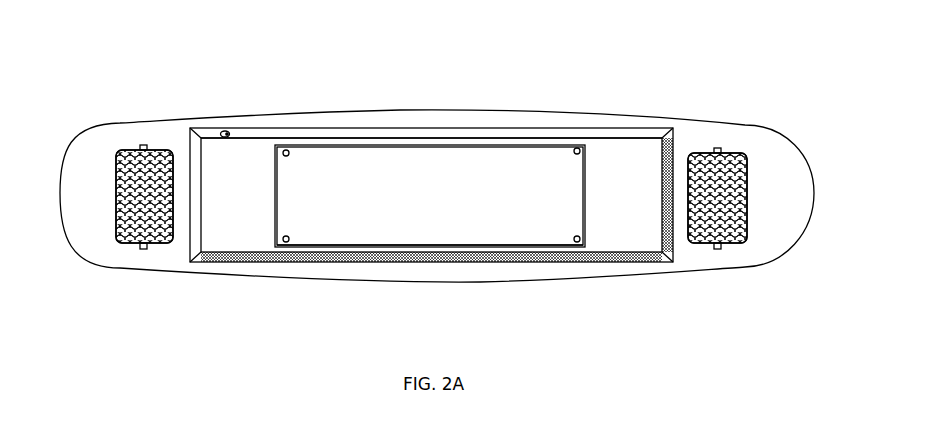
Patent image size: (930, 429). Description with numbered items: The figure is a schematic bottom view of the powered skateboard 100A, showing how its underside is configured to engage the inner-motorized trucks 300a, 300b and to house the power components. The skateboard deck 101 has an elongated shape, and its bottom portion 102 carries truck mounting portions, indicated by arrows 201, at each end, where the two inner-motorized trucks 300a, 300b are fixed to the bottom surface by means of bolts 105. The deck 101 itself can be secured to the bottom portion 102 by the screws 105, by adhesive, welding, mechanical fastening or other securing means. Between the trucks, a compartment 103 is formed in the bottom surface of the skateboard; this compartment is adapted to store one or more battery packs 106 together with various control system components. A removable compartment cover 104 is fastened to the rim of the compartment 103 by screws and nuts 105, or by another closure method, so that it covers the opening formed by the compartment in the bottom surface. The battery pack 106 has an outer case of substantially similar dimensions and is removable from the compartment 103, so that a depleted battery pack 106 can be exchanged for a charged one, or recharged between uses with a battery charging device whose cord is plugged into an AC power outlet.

The powered skateboard 100A is at (118, 36).
The skateboard deck 101 is at (427, 108).
The bottom portion 102 is at (507, 130).
The compartment 103 is at (633, 158).
The removable compartment cover 104 is at (424, 215).
The screws 105 is at (578, 243).
The battery pack 106 is at (322, 245).
The truck mounting portions 201 is at (142, 146).
The inner-motorized truck 300a is at (143, 249).
The inner-motorized truck 300b is at (717, 249).